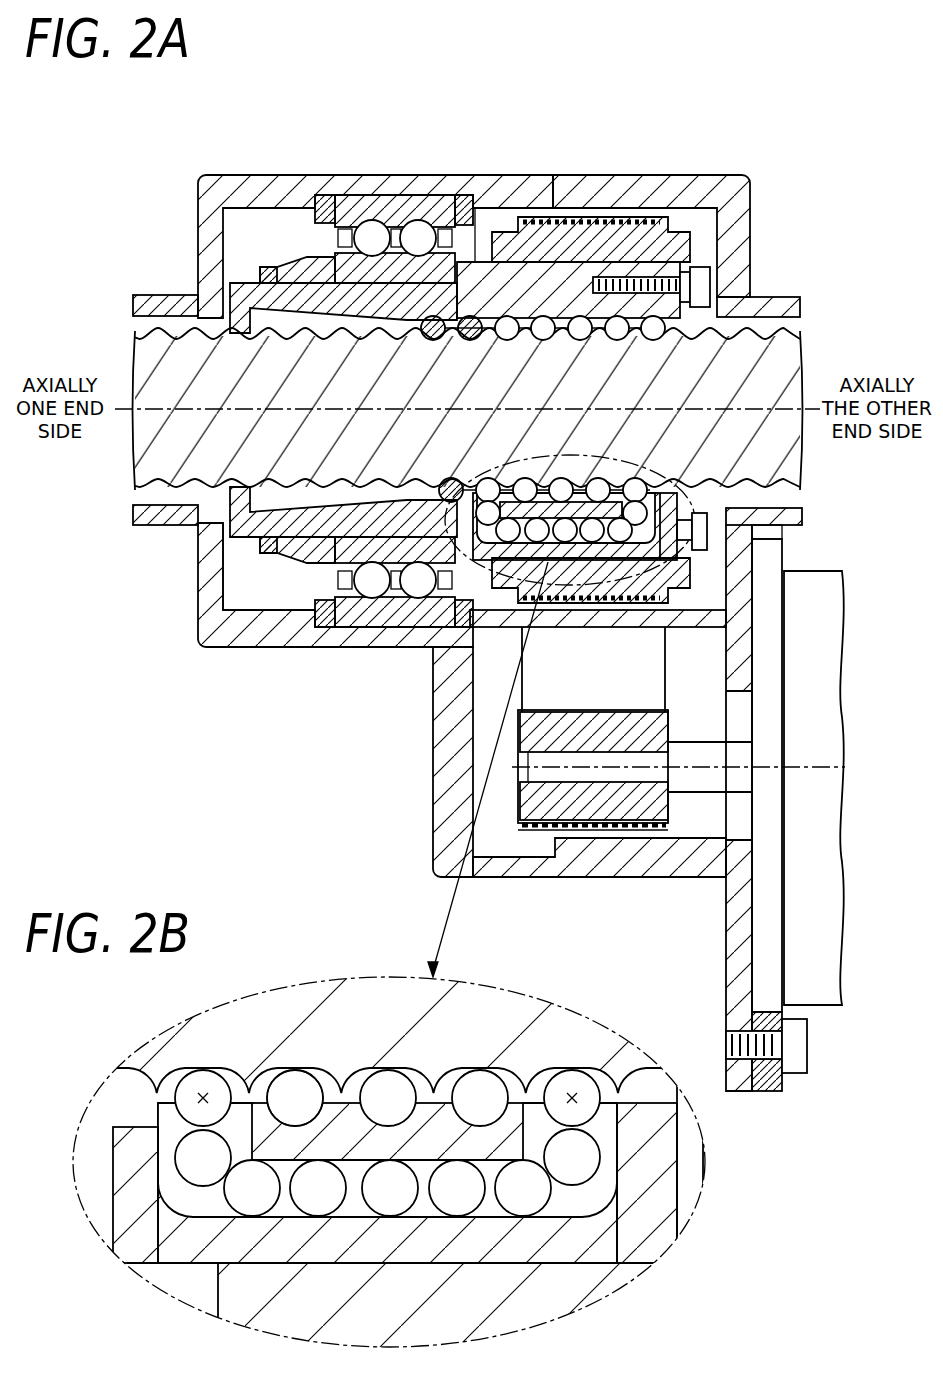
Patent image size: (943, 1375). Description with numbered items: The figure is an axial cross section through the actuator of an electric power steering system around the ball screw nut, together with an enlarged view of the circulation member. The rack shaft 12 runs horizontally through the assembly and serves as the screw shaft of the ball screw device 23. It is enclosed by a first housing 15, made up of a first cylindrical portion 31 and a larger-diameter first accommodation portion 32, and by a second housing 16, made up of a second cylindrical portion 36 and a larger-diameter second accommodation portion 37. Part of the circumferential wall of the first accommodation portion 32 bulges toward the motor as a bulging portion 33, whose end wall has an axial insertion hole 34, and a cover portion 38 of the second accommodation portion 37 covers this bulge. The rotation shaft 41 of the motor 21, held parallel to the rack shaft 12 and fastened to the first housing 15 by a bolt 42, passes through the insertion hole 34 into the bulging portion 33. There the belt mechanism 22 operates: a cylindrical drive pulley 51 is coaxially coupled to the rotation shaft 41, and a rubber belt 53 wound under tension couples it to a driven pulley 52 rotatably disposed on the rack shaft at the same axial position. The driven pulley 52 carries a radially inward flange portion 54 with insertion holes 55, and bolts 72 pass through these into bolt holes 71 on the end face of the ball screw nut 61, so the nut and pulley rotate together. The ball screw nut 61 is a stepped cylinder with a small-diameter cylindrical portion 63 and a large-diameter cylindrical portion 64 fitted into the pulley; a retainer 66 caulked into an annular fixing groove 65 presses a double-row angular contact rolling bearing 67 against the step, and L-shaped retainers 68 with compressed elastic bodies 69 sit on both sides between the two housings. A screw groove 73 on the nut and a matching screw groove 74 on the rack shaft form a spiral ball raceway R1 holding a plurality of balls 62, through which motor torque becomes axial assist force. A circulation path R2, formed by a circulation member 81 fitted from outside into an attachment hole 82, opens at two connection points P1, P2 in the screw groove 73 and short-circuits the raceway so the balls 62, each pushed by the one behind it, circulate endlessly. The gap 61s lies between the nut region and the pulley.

In FIG. 2A, the rack shaft 12 is at (131, 477).
In FIG. 2A, the first housing 15 is at (691, 374).
In FIG. 2A, the second housing 16 is at (308, 384).
In FIG. 2A, the motor 21 is at (820, 586).
In FIG. 2A, the belt mechanism 22 is at (515, 836).
In FIG. 2A, the ball screw device 23 is at (232, 549).
In FIG. 2A, the first cylindrical portion 31 is at (797, 307).
In FIG. 2A, the first accommodation portion 32 is at (690, 183).
In FIG. 2A, the bulging portion 33 is at (627, 867).
In FIG. 2A, the insertion hole 34 is at (730, 832).
In FIG. 2A, the second cylindrical portion 36 is at (147, 308).
In FIG. 2A, the second accommodation portion 37 is at (282, 178).
In FIG. 2A, the cover portion 38 is at (440, 786).
In FIG. 2A, the rotation shaft 41 is at (690, 745).
In FIG. 2A, the bolt 42 is at (807, 1052).
In FIG. 2A, the drive pulley 51 is at (567, 813).
In FIG. 2A, the driven pulley 52 is at (636, 233).
In FIG. 2A, the belt 53 is at (655, 645).
In FIG. 2A, the flange portion 54 is at (705, 562).
In FIG. 2A, the insertion hole 55 is at (690, 288).
In FIG. 2A, the ball screw nut 61 is at (228, 298).
In FIG. 2A, the gap 61s is at (476, 248).
In FIG. 2A, the balls 62 is at (578, 337).
In FIG. 2B, the balls 62 is at (458, 1088).
In FIG. 2A, the small-diameter cylindrical portion 63 is at (417, 290).
In FIG. 2A, the large-diameter cylindrical portion 64 is at (555, 277).
In FIG. 2A, the fixing groove 65 is at (258, 278).
In FIG. 2A, the retainer 66 is at (306, 268).
In FIG. 2A, the rolling bearing 67 is at (386, 192).
In FIG. 2A, the retainer 68 is at (317, 613).
In FIG. 2A, the elastic body 69 is at (327, 615).
In FIG. 2A, the bolt hole 71 is at (597, 292).
In FIG. 2A, the bolt 72 is at (710, 267).
In FIG. 2A, the screw groove 73 is at (497, 337).
In FIG. 2A, the screw groove 74 is at (780, 490).
In FIG. 2A, the circulation member 81 is at (588, 560).
In FIG. 2B, the circulation member 81 is at (174, 1262).
In FIG. 2B, the attachment hole 82 is at (613, 1237).
In FIG. 2A, the ball raceway R1 is at (480, 487).
In FIG. 2B, the ball raceway R1 is at (296, 1090).
In FIG. 2A, the circulation path R2 is at (565, 533).
In FIG. 2B, the circulation path R2 is at (390, 1200).
In FIG. 2B, the connection point P1 is at (204, 1095).
In FIG. 2B, the connection point P2 is at (572, 1095).